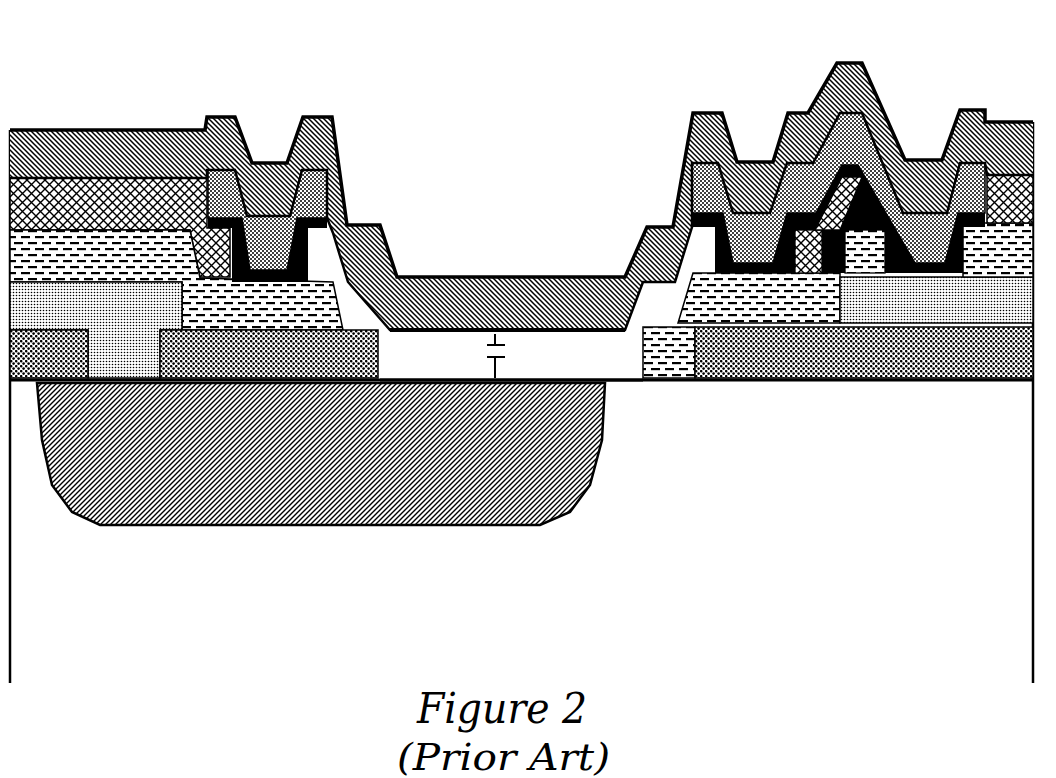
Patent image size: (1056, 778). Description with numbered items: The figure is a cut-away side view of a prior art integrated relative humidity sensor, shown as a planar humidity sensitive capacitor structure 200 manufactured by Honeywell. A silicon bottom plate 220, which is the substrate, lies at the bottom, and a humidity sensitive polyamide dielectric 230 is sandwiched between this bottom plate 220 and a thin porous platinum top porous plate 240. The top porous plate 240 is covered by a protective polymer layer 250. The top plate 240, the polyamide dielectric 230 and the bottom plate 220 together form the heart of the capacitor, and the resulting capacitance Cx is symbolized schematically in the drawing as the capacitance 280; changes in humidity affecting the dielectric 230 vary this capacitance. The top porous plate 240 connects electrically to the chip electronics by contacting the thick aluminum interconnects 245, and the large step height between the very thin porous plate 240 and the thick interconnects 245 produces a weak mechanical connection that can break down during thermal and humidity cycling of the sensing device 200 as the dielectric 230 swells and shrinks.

The planar humidity sensitive capacitor structure 200 is at (88, 72).
The silicon bottom plate 220 is at (314, 455).
The humidity sensitive polyamide dielectric 230 is at (613, 365).
The top porous plate 240 is at (558, 320).
The thick aluminum interconnects 245 is at (315, 197).
The protective polymer layer 250 is at (485, 275).
The capacitance Cx 280 is at (485, 357).